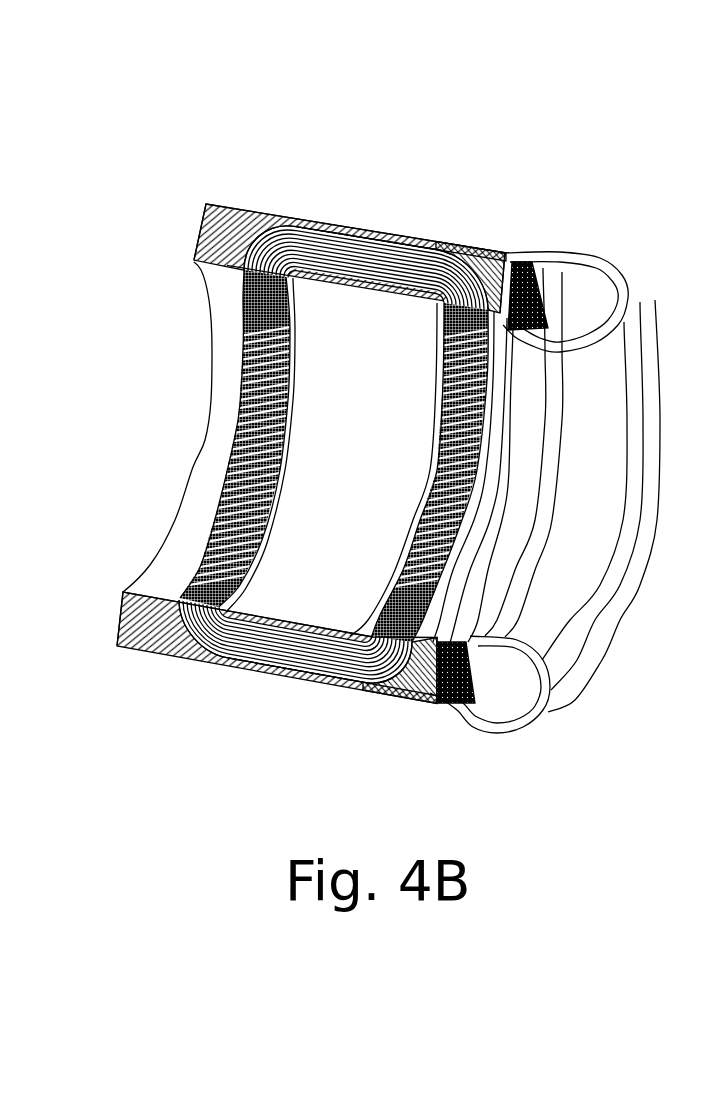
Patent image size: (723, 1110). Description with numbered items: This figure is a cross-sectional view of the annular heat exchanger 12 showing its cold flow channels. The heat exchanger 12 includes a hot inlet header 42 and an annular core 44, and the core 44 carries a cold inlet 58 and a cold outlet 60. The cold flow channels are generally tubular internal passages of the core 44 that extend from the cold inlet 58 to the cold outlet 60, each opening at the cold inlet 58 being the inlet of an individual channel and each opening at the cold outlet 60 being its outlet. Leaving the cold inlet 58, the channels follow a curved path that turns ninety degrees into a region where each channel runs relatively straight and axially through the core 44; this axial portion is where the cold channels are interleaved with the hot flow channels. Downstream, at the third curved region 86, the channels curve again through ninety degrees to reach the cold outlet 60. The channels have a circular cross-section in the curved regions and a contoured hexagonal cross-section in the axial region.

The annular heat exchanger 12 is at (487, 120).
The hot inlet header 42 is at (658, 288).
The core 44 is at (490, 230).
The cold inlet 58 is at (242, 441).
The cold outlet 60 is at (457, 547).
The third curved region 86 is at (447, 243).